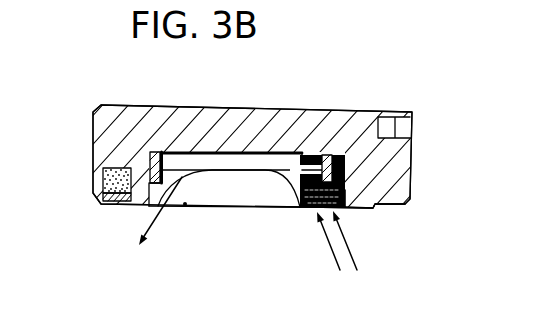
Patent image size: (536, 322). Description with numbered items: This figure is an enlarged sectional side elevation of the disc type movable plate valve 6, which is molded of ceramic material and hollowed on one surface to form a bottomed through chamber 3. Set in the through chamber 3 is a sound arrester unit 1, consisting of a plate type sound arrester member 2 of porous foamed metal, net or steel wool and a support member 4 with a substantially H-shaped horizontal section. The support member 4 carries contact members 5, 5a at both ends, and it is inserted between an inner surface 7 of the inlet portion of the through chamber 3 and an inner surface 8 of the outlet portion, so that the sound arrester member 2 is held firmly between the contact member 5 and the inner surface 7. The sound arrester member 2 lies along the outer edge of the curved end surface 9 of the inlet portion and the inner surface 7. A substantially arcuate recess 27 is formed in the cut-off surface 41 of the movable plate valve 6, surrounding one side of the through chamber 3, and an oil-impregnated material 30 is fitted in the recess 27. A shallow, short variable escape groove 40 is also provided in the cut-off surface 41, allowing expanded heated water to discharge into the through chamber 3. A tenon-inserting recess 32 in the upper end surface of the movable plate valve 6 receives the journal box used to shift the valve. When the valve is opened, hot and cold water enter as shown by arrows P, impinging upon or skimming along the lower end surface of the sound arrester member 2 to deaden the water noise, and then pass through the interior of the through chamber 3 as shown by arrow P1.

The sound arrester unit 1 is at (260, 192).
The sound arrester member 2 is at (352, 210).
The through chamber 3 is at (210, 195).
The support member 4 is at (232, 168).
The contact member 5 is at (313, 153).
The contact member 5a is at (151, 157).
The movable plate valve 6 is at (163, 110).
The inner surface of inlet portion 7 is at (345, 187).
The inner surface of outlet portion 8 is at (133, 203).
The end surface of inlet portion 9 is at (308, 212).
The arcuate recess 27 is at (103, 176).
The oil-impregnated material 30 is at (104, 203).
The tenon-inserting recess 32 is at (388, 117).
The variable escape groove 40 is at (185, 205).
The cut-off surface 41 is at (373, 210).
The arrows P is at (337, 254).
The arrow P1 is at (157, 231).